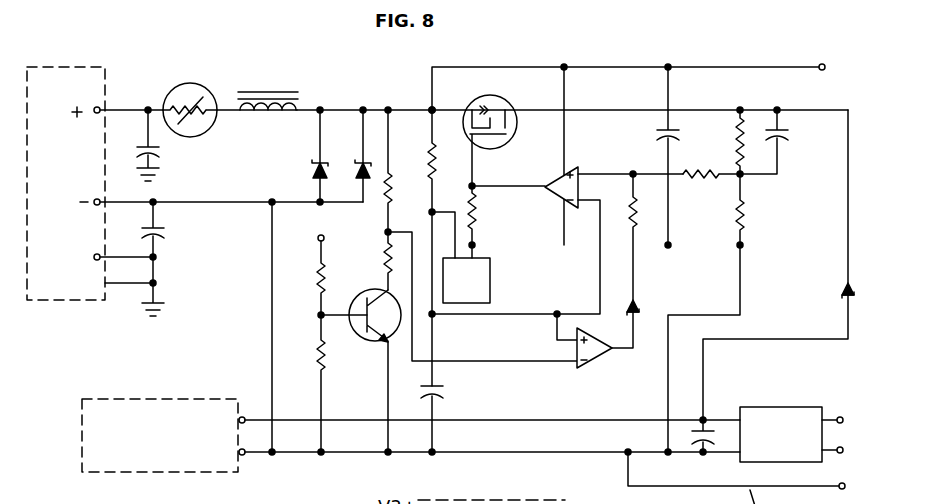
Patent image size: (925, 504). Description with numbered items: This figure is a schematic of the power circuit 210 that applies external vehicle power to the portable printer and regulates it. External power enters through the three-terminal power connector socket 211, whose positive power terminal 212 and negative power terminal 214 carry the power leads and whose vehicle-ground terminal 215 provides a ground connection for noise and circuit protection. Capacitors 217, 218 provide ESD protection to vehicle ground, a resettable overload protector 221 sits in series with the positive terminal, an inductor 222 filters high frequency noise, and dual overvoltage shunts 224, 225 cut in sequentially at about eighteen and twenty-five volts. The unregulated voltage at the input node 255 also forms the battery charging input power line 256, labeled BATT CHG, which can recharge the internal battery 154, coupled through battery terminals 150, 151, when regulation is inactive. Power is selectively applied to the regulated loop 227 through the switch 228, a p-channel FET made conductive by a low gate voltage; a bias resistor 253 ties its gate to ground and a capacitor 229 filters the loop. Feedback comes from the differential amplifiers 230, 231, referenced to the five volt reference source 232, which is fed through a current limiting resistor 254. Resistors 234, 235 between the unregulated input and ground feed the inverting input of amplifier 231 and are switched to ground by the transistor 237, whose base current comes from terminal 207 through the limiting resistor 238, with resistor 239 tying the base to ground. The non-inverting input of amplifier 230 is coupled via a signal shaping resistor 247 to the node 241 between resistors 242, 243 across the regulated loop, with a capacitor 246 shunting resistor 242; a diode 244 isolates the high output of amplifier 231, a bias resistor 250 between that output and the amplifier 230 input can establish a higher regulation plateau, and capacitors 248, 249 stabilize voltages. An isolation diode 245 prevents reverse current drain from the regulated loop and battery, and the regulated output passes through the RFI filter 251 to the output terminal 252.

The battery terminal 150 is at (245, 416).
The battery terminal 151 is at (245, 455).
The internal battery 154 is at (105, 399).
The terminal 207 is at (318, 238).
The power circuit 210 is at (415, 94).
The power connector socket 211 is at (83, 67).
The positive power terminal 212 is at (94, 114).
The negative power terminal 214 is at (96, 198).
The vehicle-ground terminal 215 is at (95, 254).
The capacitor 217 is at (162, 158).
The capacitor 218 is at (165, 238).
The resettable overload protector 221 is at (190, 84).
The inductor 222 is at (287, 93).
The overvoltage shunt 224 is at (362, 163).
The overvoltage shunt 225 is at (312, 170).
The regulated loop 227 is at (593, 108).
The switch 228 is at (505, 102).
The capacitor 229 is at (700, 446).
The differential amplifier 230 is at (566, 169).
The differential amplifier 231 is at (598, 352).
The 5 volt reference source 232 is at (491, 292).
The resistor 234 is at (360, 169).
The resistor 235 is at (362, 259).
The transistor 237 is at (366, 342).
The limiting resistor 238 is at (320, 278).
The resistor 239 is at (318, 358).
The node 241 is at (744, 178).
The resistor 242 is at (720, 140).
The resistor 243 is at (735, 214).
The diode 244 is at (640, 304).
The isolation diode 245 is at (845, 290).
The capacitor 246 is at (787, 141).
The resistor 247 is at (722, 165).
The capacitor 248 is at (444, 386).
The capacitor 249 is at (657, 133).
The bias resistor 250 is at (632, 196).
The RFI filter 251 is at (782, 405).
The output terminal 252 is at (842, 417).
The resistor 253 is at (480, 207).
The resistor 254 is at (431, 160).
The unregulated input node 255 is at (435, 108).
The battery charging input power line 256 is at (490, 67).